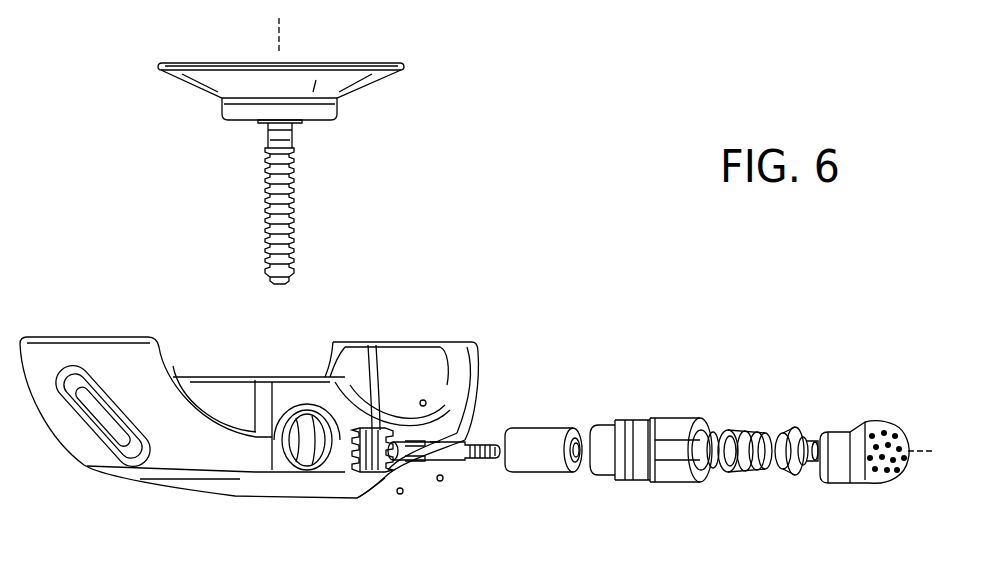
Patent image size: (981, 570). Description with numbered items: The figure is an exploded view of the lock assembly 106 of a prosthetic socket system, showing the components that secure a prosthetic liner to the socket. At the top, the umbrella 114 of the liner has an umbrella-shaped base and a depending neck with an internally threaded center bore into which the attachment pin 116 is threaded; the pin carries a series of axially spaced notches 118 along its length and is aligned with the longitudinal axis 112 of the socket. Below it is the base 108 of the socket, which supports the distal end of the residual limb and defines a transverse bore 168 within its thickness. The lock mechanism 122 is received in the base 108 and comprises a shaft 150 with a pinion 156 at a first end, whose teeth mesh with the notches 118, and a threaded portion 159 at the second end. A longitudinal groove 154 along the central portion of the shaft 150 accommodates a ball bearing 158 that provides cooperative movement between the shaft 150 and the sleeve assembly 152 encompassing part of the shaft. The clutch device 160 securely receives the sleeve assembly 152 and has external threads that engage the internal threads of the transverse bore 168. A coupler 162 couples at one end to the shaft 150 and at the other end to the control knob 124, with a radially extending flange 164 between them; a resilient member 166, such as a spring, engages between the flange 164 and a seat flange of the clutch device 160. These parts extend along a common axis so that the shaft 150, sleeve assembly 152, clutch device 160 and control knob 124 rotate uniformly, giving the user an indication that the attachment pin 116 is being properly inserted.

The lock assembly 106 is at (532, 199).
The base 108 is at (97, 328).
The longitudinal axis 112 is at (273, 33).
The umbrella 114 is at (413, 70).
The attachment pin 116 is at (240, 164).
The notches 118 is at (297, 192).
The lock mechanism 122 is at (922, 305).
The control knob 124 is at (878, 417).
The shaft 150 is at (470, 430).
The sleeve assembly 152 is at (548, 467).
The groove 154 is at (466, 433).
The pinion 156 is at (373, 477).
The ball bearing 158 is at (444, 483).
The threaded portion 159 is at (493, 462).
The clutch device 160 is at (645, 413).
The coupler 162 is at (802, 417).
The flange 164 is at (797, 477).
The resilient member 166 is at (740, 430).
The transverse bore 168 is at (310, 445).